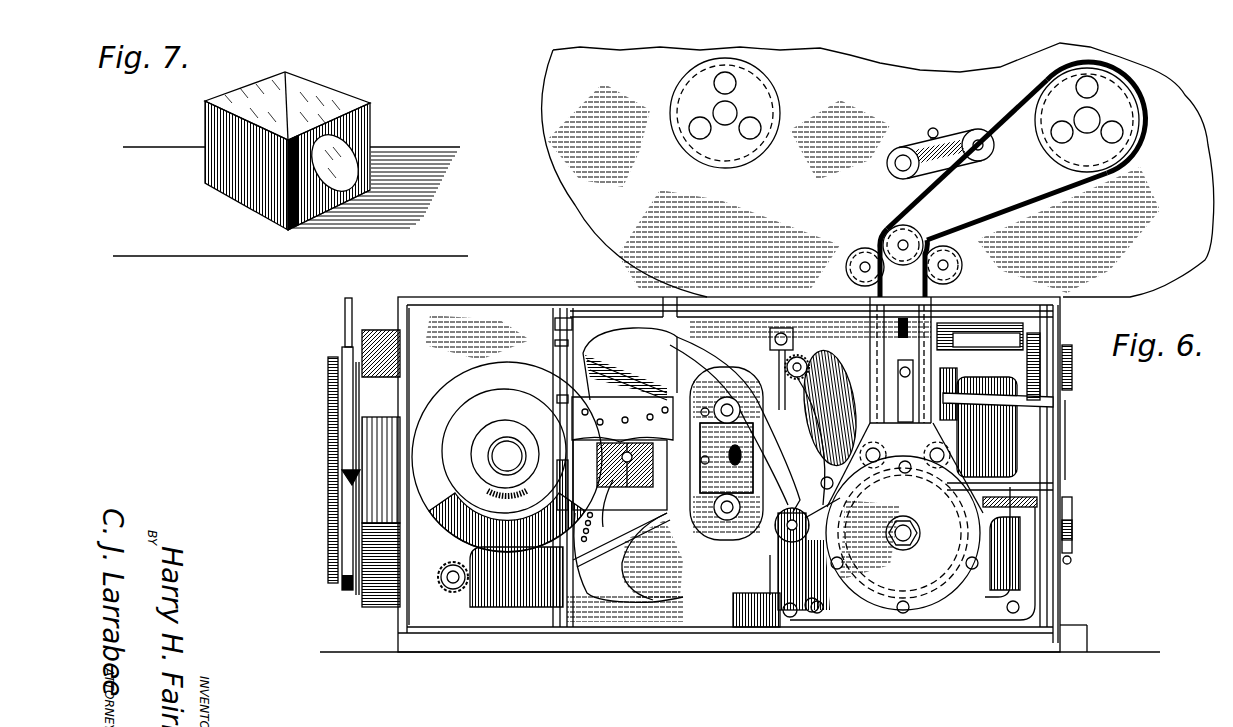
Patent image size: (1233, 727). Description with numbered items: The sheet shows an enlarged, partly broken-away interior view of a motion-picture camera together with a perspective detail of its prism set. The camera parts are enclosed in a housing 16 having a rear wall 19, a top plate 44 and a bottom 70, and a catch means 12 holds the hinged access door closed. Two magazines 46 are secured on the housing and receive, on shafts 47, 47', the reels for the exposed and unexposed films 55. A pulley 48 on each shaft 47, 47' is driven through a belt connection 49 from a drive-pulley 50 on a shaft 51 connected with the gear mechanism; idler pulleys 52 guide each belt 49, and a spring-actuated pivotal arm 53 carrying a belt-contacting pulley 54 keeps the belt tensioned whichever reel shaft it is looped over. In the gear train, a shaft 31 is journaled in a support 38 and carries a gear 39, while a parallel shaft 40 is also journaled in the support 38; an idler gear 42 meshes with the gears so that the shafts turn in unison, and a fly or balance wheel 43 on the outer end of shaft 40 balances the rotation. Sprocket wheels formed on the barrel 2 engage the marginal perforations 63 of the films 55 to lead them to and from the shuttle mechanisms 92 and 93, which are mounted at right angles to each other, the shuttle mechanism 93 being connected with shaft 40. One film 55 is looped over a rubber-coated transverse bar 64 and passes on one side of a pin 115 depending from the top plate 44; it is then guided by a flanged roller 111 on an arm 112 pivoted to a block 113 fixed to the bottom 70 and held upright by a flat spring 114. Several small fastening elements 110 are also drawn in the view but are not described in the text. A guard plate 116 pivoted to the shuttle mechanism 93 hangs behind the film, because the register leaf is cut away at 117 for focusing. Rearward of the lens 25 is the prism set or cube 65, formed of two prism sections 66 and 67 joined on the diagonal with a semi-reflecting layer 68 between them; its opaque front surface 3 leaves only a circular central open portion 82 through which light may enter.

In FIG. 6, the barrel 2 is at (935, 585).
In FIG. 7, the opaque front surface 3 is at (292, 230).
In FIG. 6, the catch means 12 is at (945, 303).
In FIG. 6, the housing 16 is at (583, 294).
In FIG. 6, the rear wall 19 is at (1058, 603).
In FIG. 6, the lens 25 is at (340, 591).
In FIG. 6, the shaft 31 is at (455, 586).
In FIG. 6, the support 38 is at (538, 467).
In FIG. 6, the gear 39 is at (453, 565).
In FIG. 6, the shaft 40 is at (497, 455).
In FIG. 6, the idler gear 42 is at (502, 586).
In FIG. 6, the fly or balance wheel 43 is at (507, 457).
In FIG. 6, the top plate 44 is at (487, 297).
In FIG. 6, the magazine 46 is at (878, 170).
In FIG. 6, the shaft 47 is at (711, 113).
In FIG. 6, the shaft 47' is at (1074, 121).
In FIG. 6, the pulley 48 is at (700, 125).
In FIG. 6, the belt connection 49 is at (955, 182).
In FIG. 6, the drive-pulley 50 is at (935, 475).
In FIG. 6, the shaft 51 is at (914, 537).
In FIG. 6, the idler pulley 52 is at (865, 250).
In FIG. 6, the spring-actuated pivotal arm 53 is at (948, 147).
In FIG. 6, the belt-contacting pulley 54 is at (985, 150).
In FIG. 6, the film 55 is at (625, 495).
In FIG. 6, the marginal perforations 63 is at (647, 370).
In FIG. 6, the bar 64 is at (722, 396).
In FIG. 7, the prism set or cube 65 is at (203, 183).
In FIG. 7, the prism section 66 is at (210, 118).
In FIG. 7, the prism section 67 is at (345, 100).
In FIG. 7, the layer 68 is at (295, 82).
In FIG. 6, the bottom 70 is at (603, 648).
In FIG. 7, the circular central open portion 82 is at (345, 150).
In FIG. 6, the shuttle mechanism 92 is at (726, 453).
In FIG. 6, the shuttle mechanism 93 is at (632, 440).
In FIG. 6, the screw 110 is at (572, 336).
In FIG. 6, the flanged roller 111 is at (767, 520).
In FIG. 6, the arm 112 is at (803, 567).
In FIG. 6, the block 113 is at (773, 623).
In FIG. 6, the flat spring 114 is at (815, 620).
In FIG. 6, the pin 115 is at (700, 326).
In FIG. 6, the guard plate 116 is at (547, 432).
In FIG. 6, the cut-away portion 117 is at (606, 511).